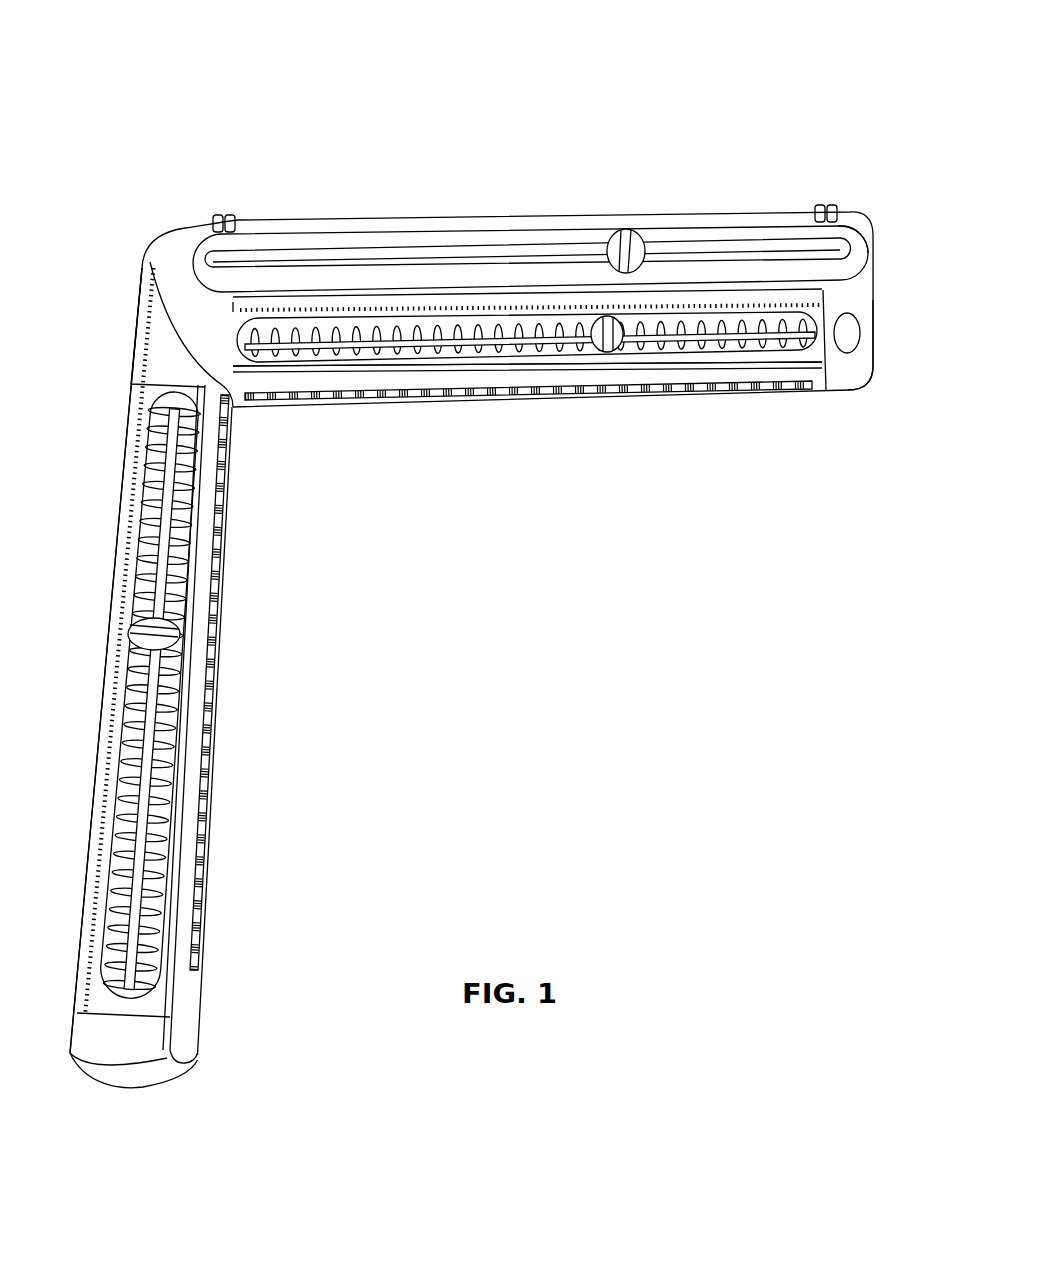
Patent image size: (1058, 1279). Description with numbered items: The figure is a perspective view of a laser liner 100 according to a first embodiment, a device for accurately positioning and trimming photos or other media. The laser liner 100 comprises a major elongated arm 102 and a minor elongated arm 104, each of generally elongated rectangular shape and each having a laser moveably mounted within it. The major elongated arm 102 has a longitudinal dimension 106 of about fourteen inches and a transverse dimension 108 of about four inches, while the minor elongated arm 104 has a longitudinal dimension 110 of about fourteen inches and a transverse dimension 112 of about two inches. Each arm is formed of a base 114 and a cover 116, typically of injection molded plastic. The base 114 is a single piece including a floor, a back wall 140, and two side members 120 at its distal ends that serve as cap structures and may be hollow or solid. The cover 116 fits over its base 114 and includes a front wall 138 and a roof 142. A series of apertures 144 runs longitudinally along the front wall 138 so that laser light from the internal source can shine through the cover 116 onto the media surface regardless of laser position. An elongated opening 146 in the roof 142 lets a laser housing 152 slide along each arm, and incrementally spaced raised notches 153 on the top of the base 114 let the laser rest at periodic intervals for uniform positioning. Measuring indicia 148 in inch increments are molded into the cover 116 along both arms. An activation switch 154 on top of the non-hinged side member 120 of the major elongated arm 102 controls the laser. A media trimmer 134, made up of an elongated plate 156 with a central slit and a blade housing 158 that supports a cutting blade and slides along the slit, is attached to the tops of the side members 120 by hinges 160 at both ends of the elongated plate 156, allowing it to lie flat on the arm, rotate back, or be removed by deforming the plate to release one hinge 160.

The laser liner 100 is at (122, 80).
The major elongated arm 102 is at (495, 567).
The minor elongated arm 104 is at (194, 711).
The longitudinal dimension 106 is at (830, 452).
The transverse dimension 108 is at (909, 215).
The longitudinal dimension 110 is at (250, 915).
The transverse dimension 112 is at (180, 1138).
The base 114 is at (139, 327).
The cover 116 is at (392, 365).
The side member 120 is at (170, 272).
The media trimmer 134 is at (855, 242).
The front wall 138 is at (242, 698).
The back wall 140 is at (80, 694).
The roof 142 is at (172, 852).
The apertures 144 is at (326, 420).
The elongated opening 146 is at (466, 350).
The measuring indicia 148 is at (664, 308).
The laser housing 152 is at (600, 340).
The raised notches 153 is at (517, 337).
The activation switch 154 is at (847, 337).
The elongated plate 156 is at (223, 249).
The blade housing 158 is at (636, 225).
The hinges 160 is at (225, 205).